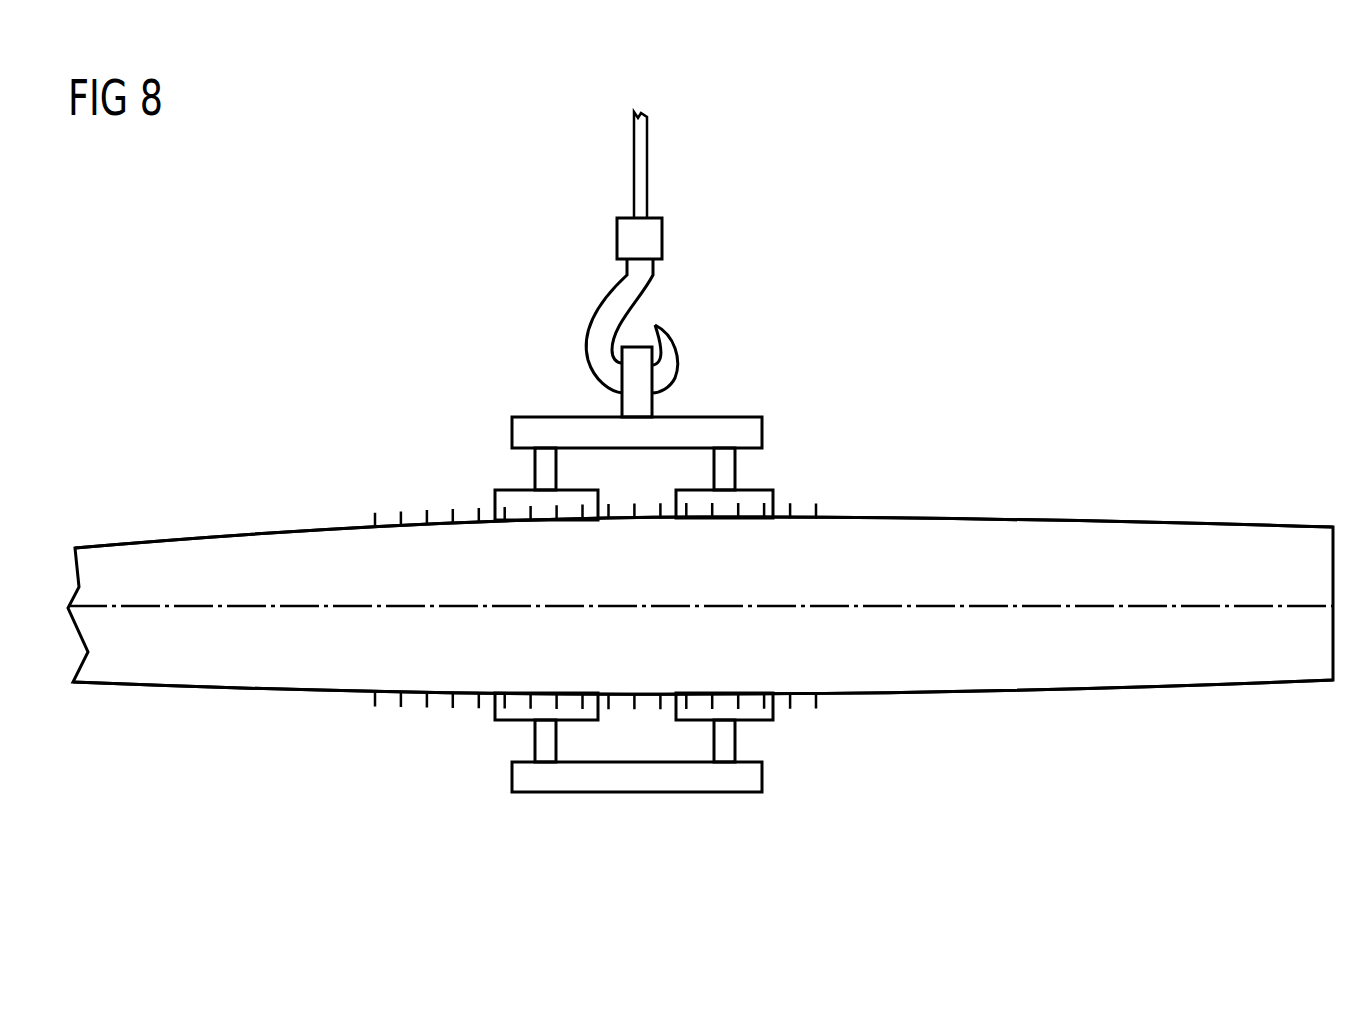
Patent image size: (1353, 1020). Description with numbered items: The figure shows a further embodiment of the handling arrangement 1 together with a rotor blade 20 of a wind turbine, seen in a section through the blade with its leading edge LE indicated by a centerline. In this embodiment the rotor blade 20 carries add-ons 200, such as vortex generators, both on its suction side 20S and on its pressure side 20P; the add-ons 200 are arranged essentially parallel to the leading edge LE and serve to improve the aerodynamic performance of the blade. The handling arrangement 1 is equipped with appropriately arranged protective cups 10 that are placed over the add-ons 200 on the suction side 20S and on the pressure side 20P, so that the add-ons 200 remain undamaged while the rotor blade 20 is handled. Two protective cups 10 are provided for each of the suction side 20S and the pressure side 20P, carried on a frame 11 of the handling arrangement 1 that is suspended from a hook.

The handling arrangement 1 is at (646, 452).
The protective cup 10 is at (495, 497).
The frame beam 11 is at (778, 469).
The rotor blade 20 is at (700, 610).
The pressure side 20P is at (211, 548).
The suction side 20S is at (1059, 673).
The add-ons 200 is at (427, 510).
The leading edge LE is at (405, 608).